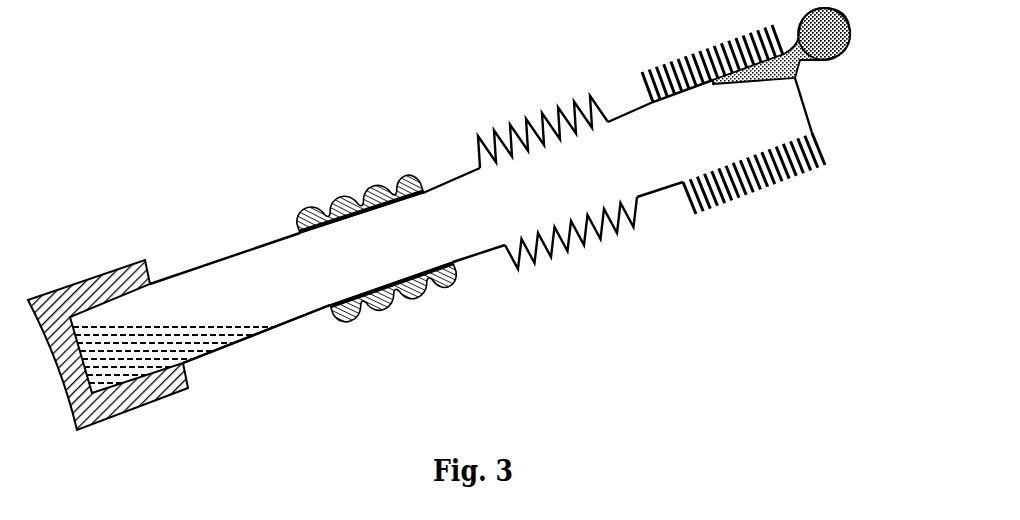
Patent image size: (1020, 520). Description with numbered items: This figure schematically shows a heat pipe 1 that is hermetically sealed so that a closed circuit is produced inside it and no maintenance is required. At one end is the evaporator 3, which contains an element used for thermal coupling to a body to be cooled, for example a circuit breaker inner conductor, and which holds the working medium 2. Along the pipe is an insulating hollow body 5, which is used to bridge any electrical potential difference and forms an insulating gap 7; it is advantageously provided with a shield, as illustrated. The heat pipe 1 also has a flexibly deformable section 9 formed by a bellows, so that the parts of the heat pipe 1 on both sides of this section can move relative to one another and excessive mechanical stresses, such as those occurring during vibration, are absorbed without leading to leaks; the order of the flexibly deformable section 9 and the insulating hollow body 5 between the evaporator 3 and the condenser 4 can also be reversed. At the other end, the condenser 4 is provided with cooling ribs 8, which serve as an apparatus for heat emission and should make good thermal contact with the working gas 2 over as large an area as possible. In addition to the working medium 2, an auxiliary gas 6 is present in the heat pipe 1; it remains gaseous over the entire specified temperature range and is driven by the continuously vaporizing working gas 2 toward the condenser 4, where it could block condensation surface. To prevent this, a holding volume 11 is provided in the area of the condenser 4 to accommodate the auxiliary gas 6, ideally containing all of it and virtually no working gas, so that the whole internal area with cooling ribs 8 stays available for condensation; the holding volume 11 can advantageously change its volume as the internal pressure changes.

The heat pipe 1 is at (139, 103).
The working medium 2 is at (292, 302).
The evaporator 3 is at (204, 372).
The condenser 4 is at (773, 205).
The insulating hollow body 5 is at (465, 293).
The insulating gap 7 is at (358, 202).
The auxiliary gas 6 is at (792, 73).
The cooling ribs 8 is at (803, 172).
The flexibly deformable section 9 is at (657, 240).
The holding volume 11 is at (846, 46).